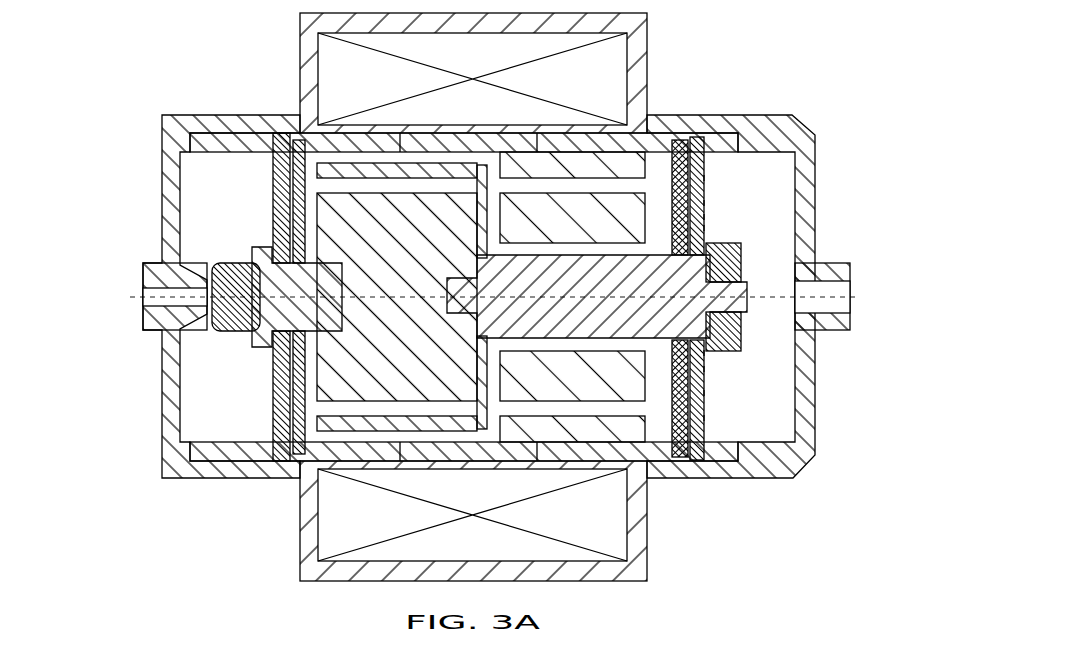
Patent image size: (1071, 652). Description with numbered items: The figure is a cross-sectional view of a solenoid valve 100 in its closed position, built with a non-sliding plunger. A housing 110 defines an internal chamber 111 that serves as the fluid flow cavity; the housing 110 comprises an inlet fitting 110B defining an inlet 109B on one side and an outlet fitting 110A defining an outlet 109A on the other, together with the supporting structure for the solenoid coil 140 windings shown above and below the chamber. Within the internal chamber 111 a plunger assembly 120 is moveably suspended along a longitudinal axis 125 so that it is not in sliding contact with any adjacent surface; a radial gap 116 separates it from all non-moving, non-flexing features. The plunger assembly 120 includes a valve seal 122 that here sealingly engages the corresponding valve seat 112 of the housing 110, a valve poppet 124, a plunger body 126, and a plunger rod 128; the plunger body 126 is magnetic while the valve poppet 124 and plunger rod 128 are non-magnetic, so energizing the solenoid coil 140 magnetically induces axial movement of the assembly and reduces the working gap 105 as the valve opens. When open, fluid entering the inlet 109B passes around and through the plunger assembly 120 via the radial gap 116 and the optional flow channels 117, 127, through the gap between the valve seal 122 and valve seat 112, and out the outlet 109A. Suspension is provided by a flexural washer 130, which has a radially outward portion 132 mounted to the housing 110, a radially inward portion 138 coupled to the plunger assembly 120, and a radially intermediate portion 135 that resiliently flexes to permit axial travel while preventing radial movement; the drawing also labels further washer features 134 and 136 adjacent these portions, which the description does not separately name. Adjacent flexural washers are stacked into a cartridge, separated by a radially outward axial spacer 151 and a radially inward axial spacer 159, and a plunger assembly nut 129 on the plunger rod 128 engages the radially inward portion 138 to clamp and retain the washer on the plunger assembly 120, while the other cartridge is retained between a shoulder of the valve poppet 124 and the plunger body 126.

The solenoid valve 100 is at (491, 320).
The working gap 105 is at (464, 326).
The outlet 109A is at (148, 303).
The inlet 109B is at (855, 281).
The housing 110 is at (507, 262).
The outlet fitting 110A is at (189, 296).
The inlet fitting 110B is at (791, 296).
The internal chamber 111 is at (773, 310).
The valve seat 112 is at (212, 316).
The radial gap 116 is at (443, 438).
The flow channel 117 is at (568, 349).
The plunger assembly 120 is at (311, 158).
The valve seal 122 is at (508, 326).
The valve poppet 124 is at (268, 343).
The longitudinal axis 125 is at (137, 293).
The plunger body 126 is at (312, 450).
The flow channel 127 is at (459, 384).
The plunger rod 128 is at (622, 322).
The plunger assembly nut 129 is at (728, 338).
The flexural washer 130 is at (774, 289).
The radially outward portion 132 is at (698, 162).
The sensor 134 is at (710, 178).
The radially intermediate portion 135 is at (705, 203).
The spacer 136 is at (712, 217).
The radially inward portion 138 is at (707, 228).
The solenoid coil 140 is at (350, 62).
The radially outward axial spacer 151 is at (688, 143).
The radially inward axial spacer 159 is at (712, 262).